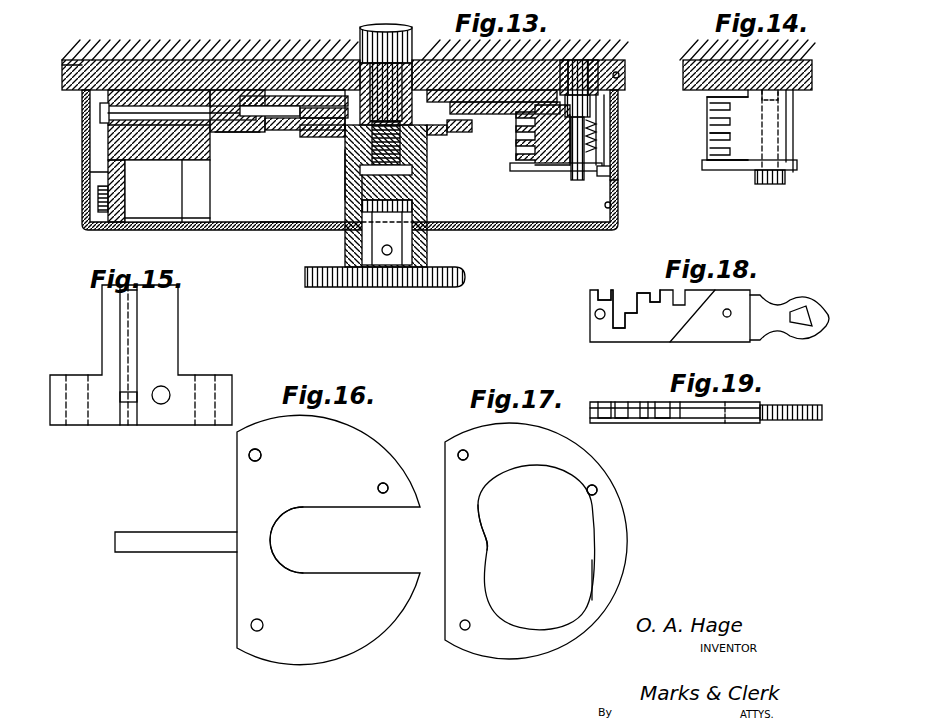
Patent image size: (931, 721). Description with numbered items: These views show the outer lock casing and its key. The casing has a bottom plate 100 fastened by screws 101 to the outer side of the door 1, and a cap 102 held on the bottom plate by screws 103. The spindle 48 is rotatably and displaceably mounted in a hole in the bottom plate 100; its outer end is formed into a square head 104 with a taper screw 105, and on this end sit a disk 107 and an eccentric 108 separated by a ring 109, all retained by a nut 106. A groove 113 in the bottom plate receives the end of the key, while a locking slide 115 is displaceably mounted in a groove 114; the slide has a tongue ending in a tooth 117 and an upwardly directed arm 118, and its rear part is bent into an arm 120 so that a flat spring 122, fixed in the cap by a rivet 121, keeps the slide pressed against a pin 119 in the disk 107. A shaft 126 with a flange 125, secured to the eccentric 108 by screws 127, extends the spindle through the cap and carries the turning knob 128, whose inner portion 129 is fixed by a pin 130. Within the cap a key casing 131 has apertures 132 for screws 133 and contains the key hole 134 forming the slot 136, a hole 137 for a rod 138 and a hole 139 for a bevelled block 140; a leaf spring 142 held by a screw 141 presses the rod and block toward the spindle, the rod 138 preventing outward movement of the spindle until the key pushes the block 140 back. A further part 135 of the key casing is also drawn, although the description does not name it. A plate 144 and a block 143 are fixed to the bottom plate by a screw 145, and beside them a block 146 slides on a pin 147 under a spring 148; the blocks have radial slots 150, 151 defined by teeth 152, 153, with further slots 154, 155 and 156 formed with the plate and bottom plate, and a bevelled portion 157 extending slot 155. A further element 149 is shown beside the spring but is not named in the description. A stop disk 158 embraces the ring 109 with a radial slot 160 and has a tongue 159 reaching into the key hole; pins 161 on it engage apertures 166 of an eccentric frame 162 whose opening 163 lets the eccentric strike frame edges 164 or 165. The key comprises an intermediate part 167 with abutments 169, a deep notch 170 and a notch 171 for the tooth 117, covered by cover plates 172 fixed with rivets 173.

In FIG. 13, the door 1 is at (90, 58).
In FIG. 13, the spindle 48 is at (392, 21).
In FIG. 13, the bottom plate 100 is at (612, 62).
In FIG. 14, the bottom plate 100 is at (795, 90).
In FIG. 13, the screws 101 is at (124, 62).
In FIG. 13, the cap 102 is at (268, 230).
In FIG. 13, the screws 103 is at (619, 77).
In FIG. 13, the square head 104 is at (345, 138).
In FIG. 13, the taper screw 105 is at (345, 155).
In FIG. 13, the nut 106 is at (345, 175).
In FIG. 13, the disk 107 is at (262, 94).
In FIG. 13, the eccentric 108 is at (450, 104).
In FIG. 13, the ring 109 is at (345, 90).
In FIG. 13, the groove 113 is at (84, 80).
In FIG. 13, the groove 114 is at (302, 106).
In FIG. 13, the locking slide 115 is at (300, 128).
In FIG. 13, the tooth 117 is at (196, 92).
In FIG. 13, the arm 118 is at (505, 98).
In FIG. 13, the pin 119 is at (445, 88).
In FIG. 13, the arm 120 is at (611, 172).
In FIG. 13, the rivet 121 is at (612, 206).
In FIG. 13, the flat spring 122 is at (612, 190).
In FIG. 13, the flange 125 is at (300, 132).
In FIG. 13, the shaft 126 is at (345, 200).
In FIG. 13, the screws 127 is at (440, 140).
In FIG. 13, the turning knob 128 is at (470, 275).
In FIG. 13, the inner portion of the turning knob 129 is at (427, 250).
In FIG. 13, the pin 130 is at (345, 248).
In FIG. 13, the key casing 131 is at (200, 160).
In FIG. 15, the key casing 131 is at (152, 329).
In FIG. 15, the apertures 132 is at (78, 395).
In FIG. 13, the screws 133 is at (160, 90).
In FIG. 13, the key hole 134 is at (112, 225).
In FIG. 15, the key hole 134 is at (128, 288).
In FIG. 13, the bottom plate 135 is at (180, 230).
In FIG. 13, the slot 136 is at (190, 196).
In FIG. 15, the slot 136 is at (128, 329).
In FIG. 15, the hole 137 is at (163, 404).
In FIG. 13, the rod 138 is at (226, 130).
In FIG. 15, the hole 139 is at (128, 404).
In FIG. 13, the bevelled block 140 is at (98, 109).
In FIG. 13, the screw 141 is at (100, 200).
In FIG. 13, the leaf spring 142 is at (104, 173).
In FIG. 14, the block 143 is at (782, 133).
In FIG. 13, the plate 144 is at (516, 172).
In FIG. 14, the plate 144 is at (718, 172).
In FIG. 14, the screw 145 is at (786, 182).
In FIG. 13, the block 146 is at (606, 154).
In FIG. 13, the pin 147 is at (590, 100).
In FIG. 13, the spring 148 is at (598, 120).
In FIG. 13, the spring 149 is at (600, 136).
In FIG. 14, the slots 150 is at (712, 120).
In FIG. 13, the slots 151 is at (533, 130).
In FIG. 14, the teeth 152 is at (712, 136).
In FIG. 13, the teeth 153 is at (520, 158).
In FIG. 14, the slot 154 is at (716, 158).
In FIG. 13, the slot 155 is at (540, 172).
In FIG. 14, the slot 156 is at (716, 100).
In FIG. 13, the bevelled portion 157 is at (572, 172).
In FIG. 13, the stop disk 158 is at (328, 90).
In FIG. 16, the stop disk 158 is at (250, 579).
In FIG. 13, the tongue 159 is at (236, 96).
In FIG. 16, the tongue 159 is at (140, 540).
In FIG. 16, the radial slot 160 is at (296, 527).
In FIG. 16, the pins 161 is at (262, 452).
In FIG. 13, the eccentric frame 162 is at (480, 134).
In FIG. 17, the eccentric frame 162 is at (490, 640).
In FIG. 17, the opening 163 is at (498, 534).
In FIG. 17, the frame edge 164 is at (489, 581).
In FIG. 17, the frame edge 165 is at (593, 581).
In FIG. 17, the apertures 166 is at (586, 492).
In FIG. 18, the intermediate part 167 is at (645, 328).
In FIG. 19, the intermediate part 167 is at (745, 416).
In FIG. 18, the abutments 169 is at (657, 300).
In FIG. 19, the abutments 169 is at (670, 418).
In FIG. 18, the notch 170 is at (614, 325).
In FIG. 19, the notch 170 is at (620, 418).
In FIG. 18, the notch 171 is at (604, 290).
In FIG. 19, the notch 171 is at (603, 410).
In FIG. 18, the cover plates 172 is at (745, 300).
In FIG. 19, the cover plates 172 is at (700, 423).
In FIG. 18, the rivets 173 is at (595, 314).
In FIG. 19, the rivets 173 is at (735, 423).